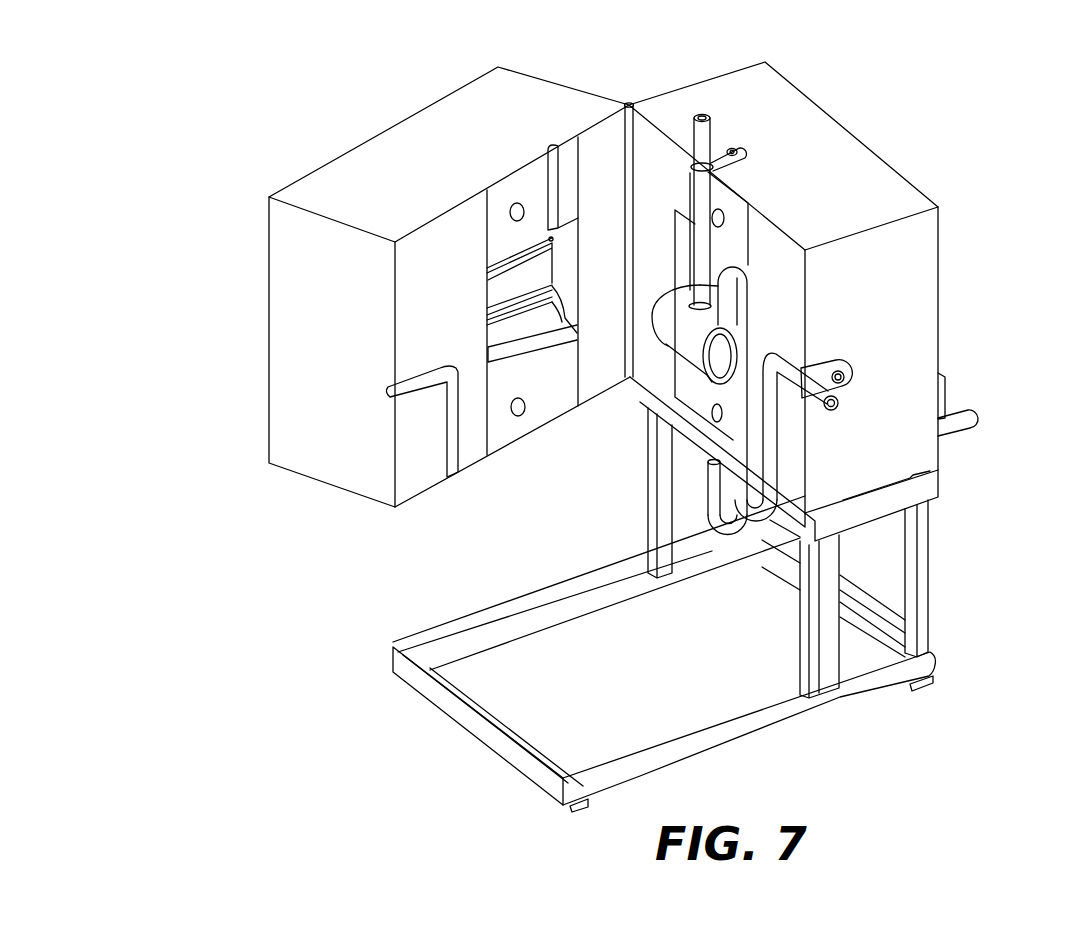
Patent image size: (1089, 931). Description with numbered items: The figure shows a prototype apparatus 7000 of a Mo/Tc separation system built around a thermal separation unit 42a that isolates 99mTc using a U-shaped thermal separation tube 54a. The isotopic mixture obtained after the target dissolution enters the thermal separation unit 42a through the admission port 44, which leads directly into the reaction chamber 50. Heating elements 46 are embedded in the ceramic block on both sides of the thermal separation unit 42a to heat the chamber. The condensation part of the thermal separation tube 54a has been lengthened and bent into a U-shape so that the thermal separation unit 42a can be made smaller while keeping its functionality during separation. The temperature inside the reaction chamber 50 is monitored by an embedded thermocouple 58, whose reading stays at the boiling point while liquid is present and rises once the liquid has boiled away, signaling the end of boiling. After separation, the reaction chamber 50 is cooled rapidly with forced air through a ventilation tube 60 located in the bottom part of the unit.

The apparatus 7000 is at (925, 61).
The thermal separation unit 42a is at (936, 601).
The admission port 44 is at (704, 116).
The heating elements 46 is at (487, 269).
The reaction chamber 50 is at (692, 323).
The U-shaped thermal separation tube 54a is at (742, 290).
The thermocouple 58 is at (658, 290).
The ventilation tube 60 is at (978, 419).